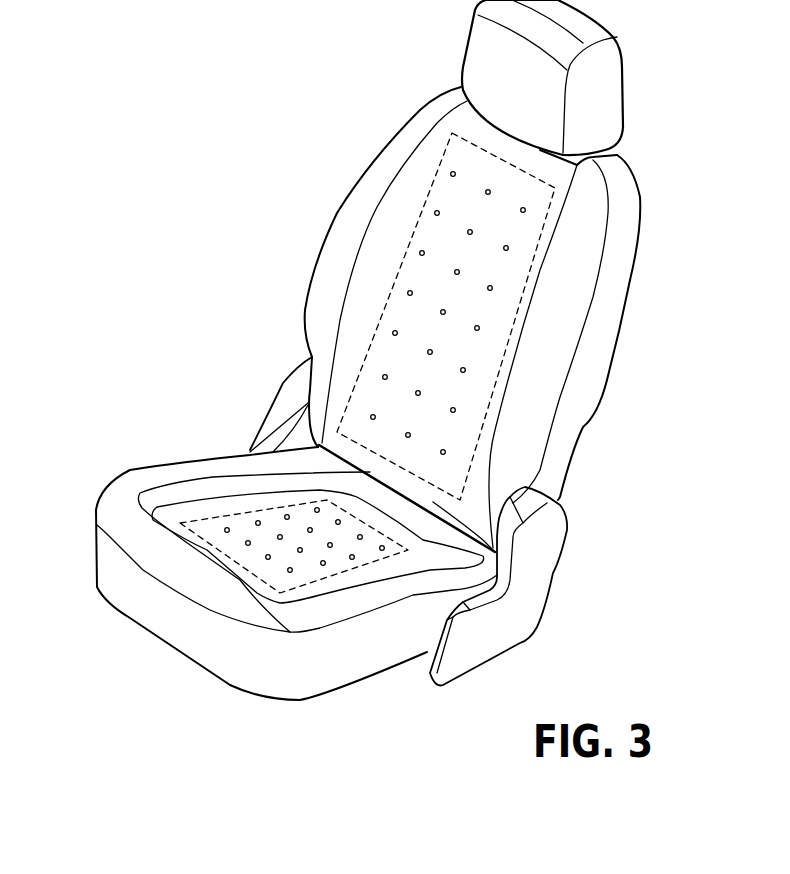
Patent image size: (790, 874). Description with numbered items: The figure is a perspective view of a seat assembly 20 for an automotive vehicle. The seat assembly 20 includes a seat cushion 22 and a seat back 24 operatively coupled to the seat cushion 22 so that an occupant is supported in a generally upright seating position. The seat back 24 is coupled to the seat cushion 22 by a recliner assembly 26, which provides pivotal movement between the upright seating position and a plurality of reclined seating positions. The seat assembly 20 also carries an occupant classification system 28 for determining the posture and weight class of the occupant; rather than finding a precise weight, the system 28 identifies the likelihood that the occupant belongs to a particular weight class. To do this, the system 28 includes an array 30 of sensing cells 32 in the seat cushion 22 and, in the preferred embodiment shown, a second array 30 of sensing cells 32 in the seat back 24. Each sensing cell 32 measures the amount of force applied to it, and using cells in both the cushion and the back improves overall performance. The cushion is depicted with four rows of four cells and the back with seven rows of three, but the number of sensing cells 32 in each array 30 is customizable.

The seat assembly 20 is at (241, 187).
The seat cushion 22 is at (117, 587).
The seat back 24 is at (605, 338).
The recliner assembly 26 is at (563, 535).
The occupant classification system 28 is at (170, 392).
The array of sensing cells 30 is at (532, 253).
The sensing cell 32 is at (393, 333).